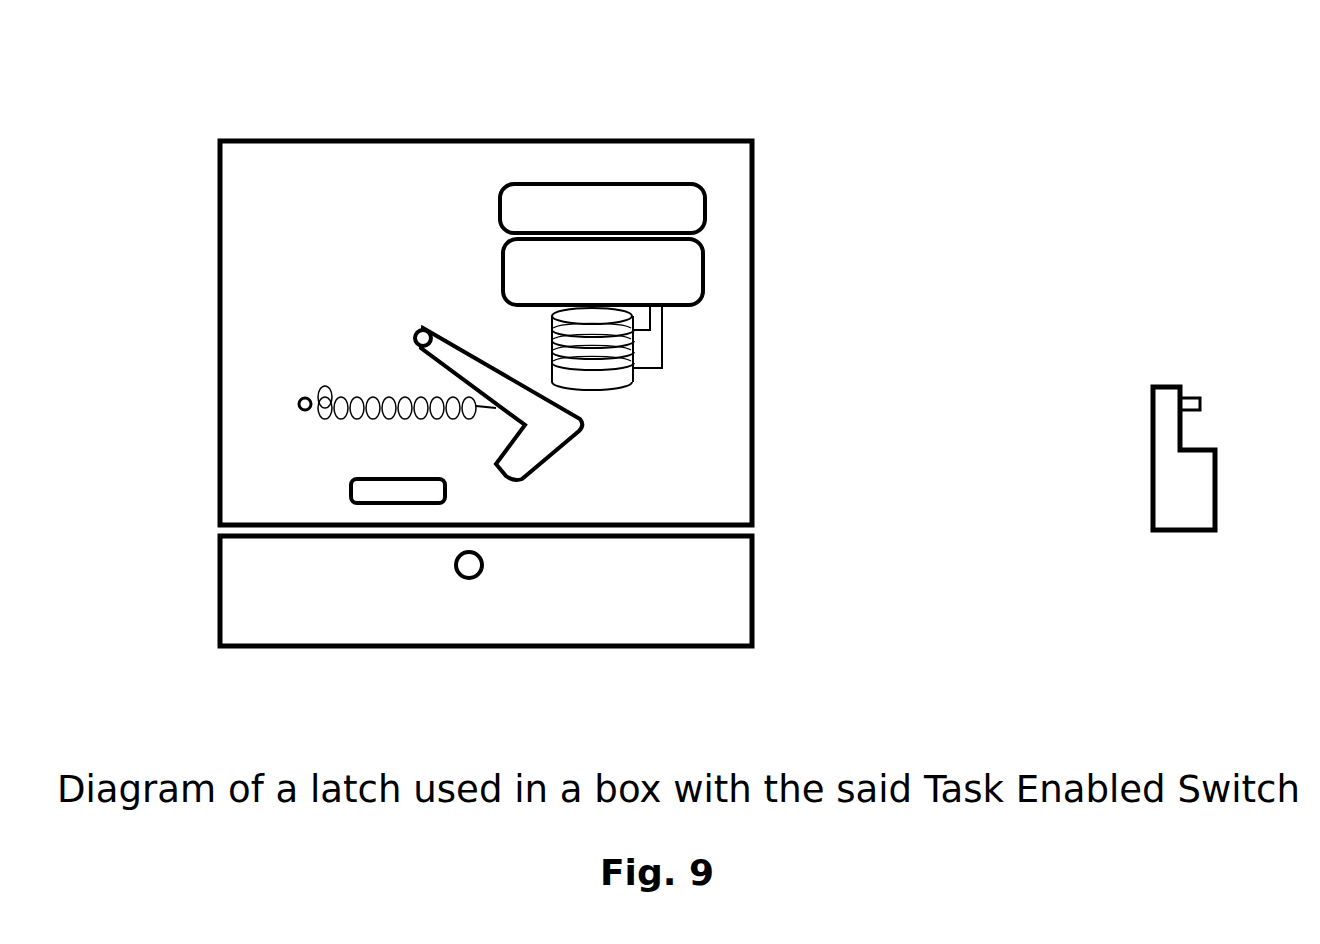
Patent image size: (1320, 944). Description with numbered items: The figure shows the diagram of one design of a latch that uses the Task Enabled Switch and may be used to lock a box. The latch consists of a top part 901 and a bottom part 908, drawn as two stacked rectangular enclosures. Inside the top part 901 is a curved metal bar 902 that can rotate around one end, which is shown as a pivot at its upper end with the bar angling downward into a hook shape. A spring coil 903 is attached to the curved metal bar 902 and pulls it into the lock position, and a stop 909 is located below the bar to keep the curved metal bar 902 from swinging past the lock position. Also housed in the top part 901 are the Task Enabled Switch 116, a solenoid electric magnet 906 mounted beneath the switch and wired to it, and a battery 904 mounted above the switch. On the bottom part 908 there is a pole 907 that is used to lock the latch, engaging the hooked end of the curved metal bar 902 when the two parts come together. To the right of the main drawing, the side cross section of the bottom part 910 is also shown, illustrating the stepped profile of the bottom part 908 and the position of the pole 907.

The top part 901 is at (290, 205).
The curved metal bar 902 is at (463, 363).
The spring coil 903 is at (340, 409).
The battery 904 is at (672, 208).
The Task Enabled Switch 116 is at (670, 283).
The solenoid electric magnet 906 is at (640, 385).
The pole 907 is at (483, 565).
The bottom part 908 is at (1175, 508).
The stop 909 is at (372, 488).
The side cross section of the bottom part 910 is at (1163, 403).